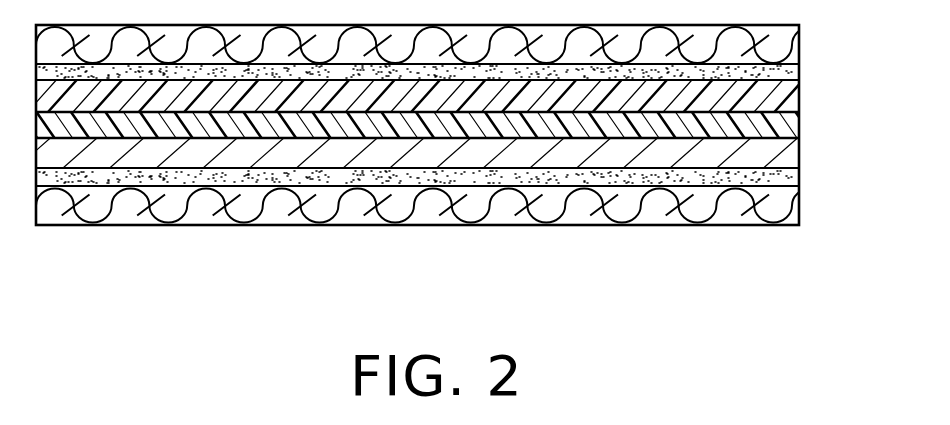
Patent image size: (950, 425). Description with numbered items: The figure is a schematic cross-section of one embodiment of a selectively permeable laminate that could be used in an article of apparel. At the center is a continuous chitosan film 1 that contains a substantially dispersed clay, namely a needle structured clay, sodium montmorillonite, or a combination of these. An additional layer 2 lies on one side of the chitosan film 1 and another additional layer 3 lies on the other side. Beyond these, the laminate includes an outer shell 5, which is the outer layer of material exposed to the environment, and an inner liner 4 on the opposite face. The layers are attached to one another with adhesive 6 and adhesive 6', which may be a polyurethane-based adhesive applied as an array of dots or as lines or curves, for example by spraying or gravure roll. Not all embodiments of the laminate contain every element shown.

The outer shell 5 is at (800, 44).
The adhesive 6 is at (459, 72).
The additional layer 3 is at (800, 96).
The continuous chitosan film 1 is at (800, 123).
The additional layer 2 is at (800, 151).
The adhesive 6' is at (463, 177).
The inner liner 4 is at (800, 204).